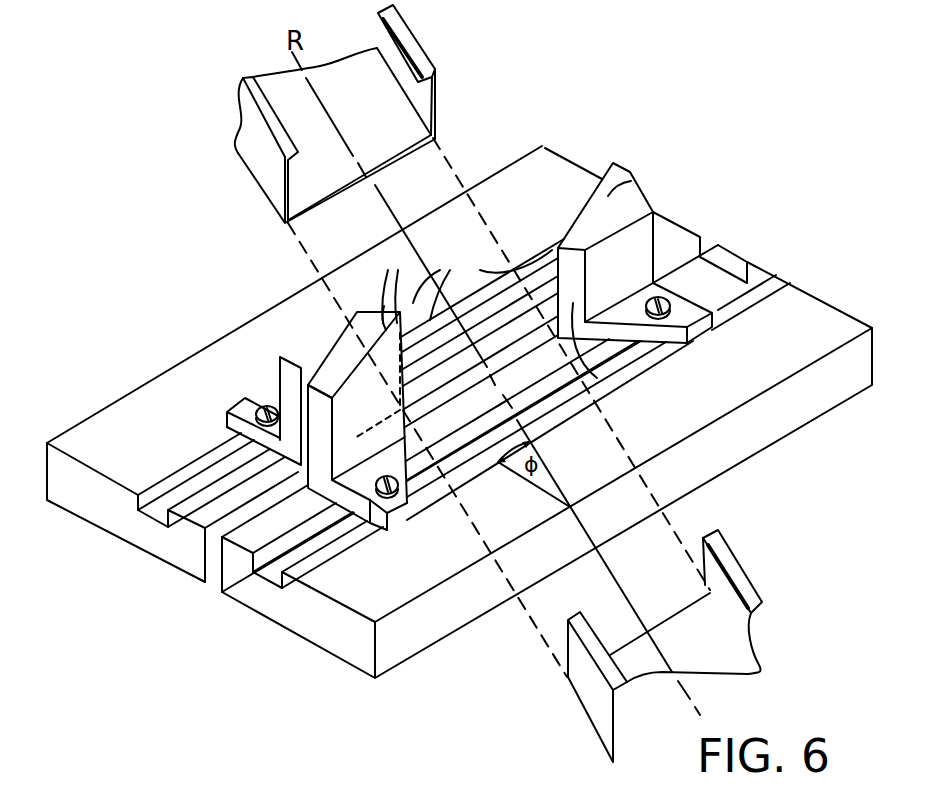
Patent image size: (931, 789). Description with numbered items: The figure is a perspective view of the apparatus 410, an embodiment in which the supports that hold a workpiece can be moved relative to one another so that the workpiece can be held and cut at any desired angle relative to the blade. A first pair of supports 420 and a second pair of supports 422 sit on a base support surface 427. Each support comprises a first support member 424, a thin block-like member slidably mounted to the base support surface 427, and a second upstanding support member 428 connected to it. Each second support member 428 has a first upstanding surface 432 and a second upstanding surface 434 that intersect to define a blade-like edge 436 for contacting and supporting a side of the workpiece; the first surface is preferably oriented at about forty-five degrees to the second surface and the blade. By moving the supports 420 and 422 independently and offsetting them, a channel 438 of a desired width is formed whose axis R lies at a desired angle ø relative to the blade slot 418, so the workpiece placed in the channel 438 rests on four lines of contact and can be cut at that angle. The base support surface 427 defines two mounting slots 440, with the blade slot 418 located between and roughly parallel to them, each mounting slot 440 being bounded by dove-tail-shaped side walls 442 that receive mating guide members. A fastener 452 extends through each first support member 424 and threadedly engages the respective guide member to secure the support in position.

The apparatus 410 is at (512, 108).
The blade slot 418 is at (213, 547).
The first pair of supports 420 is at (634, 160).
The second pair of supports 422 is at (350, 372).
The first support member 424 is at (553, 178).
The base support surface 427 is at (705, 422).
The second upstanding support member 428 is at (604, 165).
The first upstanding surface 432 is at (546, 212).
The second upstanding surface 434 is at (614, 194).
The blade-like edge 436 is at (550, 230).
The channel 438 is at (607, 463).
The mounting slot 440 is at (147, 513).
The dove-tail-shaped side wall 442 is at (140, 499).
The fastener 452 is at (670, 304).